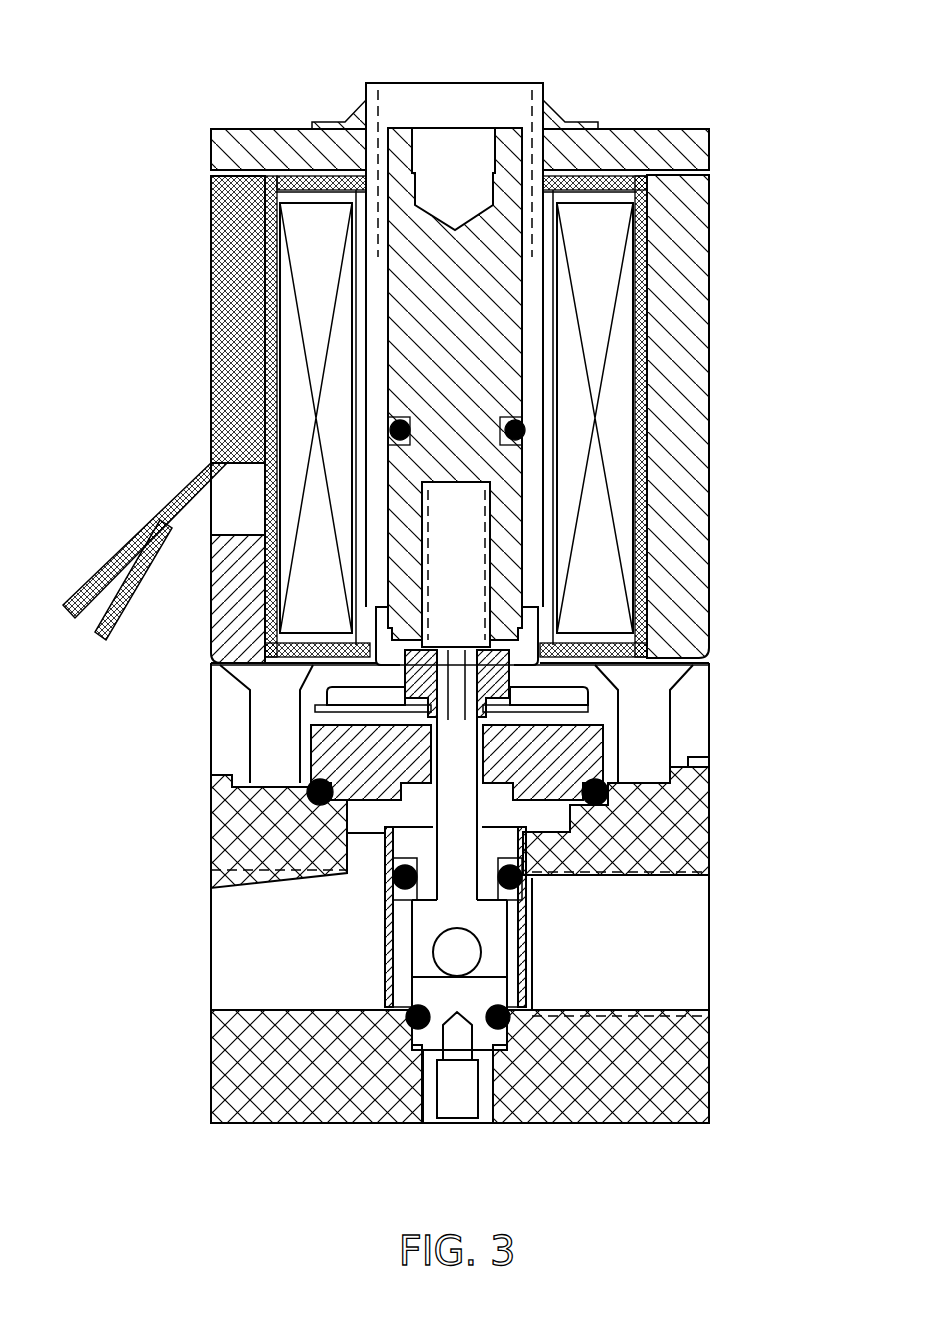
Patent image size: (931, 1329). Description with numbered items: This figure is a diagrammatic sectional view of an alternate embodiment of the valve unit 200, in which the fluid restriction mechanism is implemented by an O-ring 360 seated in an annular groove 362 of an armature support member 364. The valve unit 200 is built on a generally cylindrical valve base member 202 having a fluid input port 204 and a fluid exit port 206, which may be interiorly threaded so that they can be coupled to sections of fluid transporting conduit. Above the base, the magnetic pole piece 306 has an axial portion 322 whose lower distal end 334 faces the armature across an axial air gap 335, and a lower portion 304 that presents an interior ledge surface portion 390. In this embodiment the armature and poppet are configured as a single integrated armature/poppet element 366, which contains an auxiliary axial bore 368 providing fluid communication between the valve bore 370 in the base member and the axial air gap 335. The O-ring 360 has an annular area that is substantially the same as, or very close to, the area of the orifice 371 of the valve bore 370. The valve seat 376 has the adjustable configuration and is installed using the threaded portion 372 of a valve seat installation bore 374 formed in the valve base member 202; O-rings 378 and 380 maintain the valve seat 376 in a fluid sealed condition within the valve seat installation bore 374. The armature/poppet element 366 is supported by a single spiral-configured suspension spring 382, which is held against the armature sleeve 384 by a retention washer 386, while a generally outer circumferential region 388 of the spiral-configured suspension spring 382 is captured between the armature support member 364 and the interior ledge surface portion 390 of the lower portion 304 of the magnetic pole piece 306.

The valve unit 200 is at (722, 1100).
The valve base member 202 is at (685, 1058).
The fluid input port 204 is at (634, 962).
The fluid exit port 206 is at (232, 921).
The lower portion of magnetic pole piece 304 is at (688, 743).
The magnetic pole piece 306 is at (540, 150).
The axial portion of magnetic pole piece 322 is at (397, 143).
The lower distal end of axial portion 334 is at (500, 633).
The axial air gap 335 is at (410, 642).
The O-ring 360 is at (488, 768).
The annular groove 362 is at (333, 805).
The armature support member 364 is at (235, 772).
The armature/poppet element 366 is at (320, 805).
The auxiliary axial bore 368 is at (457, 652).
The valve bore 370 is at (405, 905).
The orifice 371 is at (443, 907).
The threaded portion 372 is at (507, 945).
The valve seat installation bore 374 is at (510, 990).
The valve seat 376 is at (385, 872).
The O-ring 378 is at (525, 878).
The O-ring 380 is at (515, 1017).
The spiral-configured suspension spring 382 is at (522, 703).
The armature sleeve 384 is at (417, 680).
The retention washer 386 is at (310, 717).
The outer circumferential region of suspension spring 388 is at (247, 707).
The interior ledge surface portion 390 is at (680, 682).